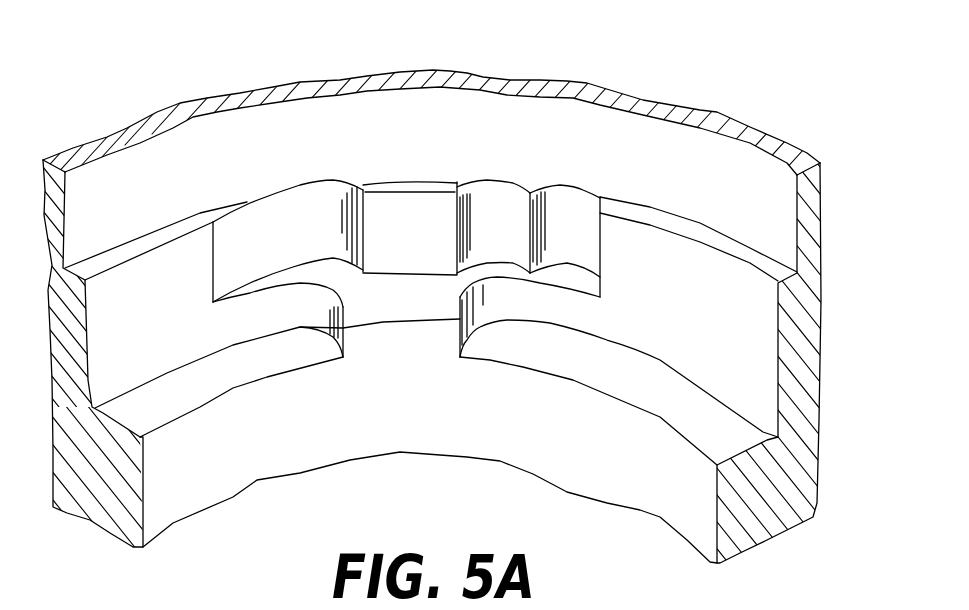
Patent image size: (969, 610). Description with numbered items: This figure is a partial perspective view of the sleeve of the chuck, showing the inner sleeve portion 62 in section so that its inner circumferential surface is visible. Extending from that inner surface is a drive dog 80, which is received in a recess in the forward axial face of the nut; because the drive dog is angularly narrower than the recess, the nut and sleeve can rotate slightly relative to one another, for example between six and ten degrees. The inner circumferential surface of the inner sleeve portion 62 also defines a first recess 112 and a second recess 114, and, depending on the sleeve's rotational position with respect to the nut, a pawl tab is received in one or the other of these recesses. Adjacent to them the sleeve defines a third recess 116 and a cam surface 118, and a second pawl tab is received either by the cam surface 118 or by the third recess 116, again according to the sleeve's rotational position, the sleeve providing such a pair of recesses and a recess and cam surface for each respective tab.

The inner sleeve portion 62 is at (644, 100).
The drive dog 80 is at (408, 343).
The first recess 112 is at (497, 200).
The second recess 114 is at (582, 218).
The third recess 116 is at (320, 215).
The cam surface 118 is at (242, 232).